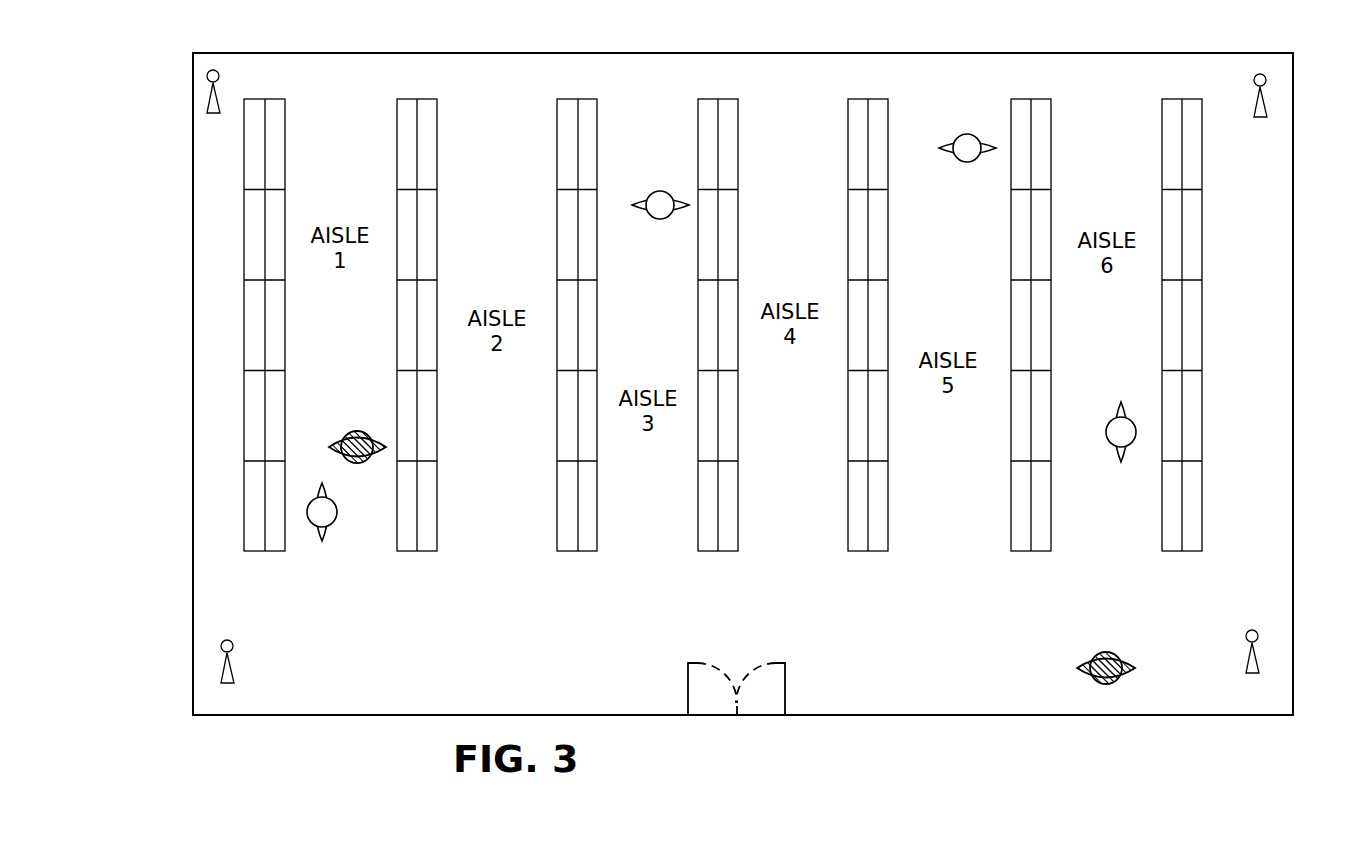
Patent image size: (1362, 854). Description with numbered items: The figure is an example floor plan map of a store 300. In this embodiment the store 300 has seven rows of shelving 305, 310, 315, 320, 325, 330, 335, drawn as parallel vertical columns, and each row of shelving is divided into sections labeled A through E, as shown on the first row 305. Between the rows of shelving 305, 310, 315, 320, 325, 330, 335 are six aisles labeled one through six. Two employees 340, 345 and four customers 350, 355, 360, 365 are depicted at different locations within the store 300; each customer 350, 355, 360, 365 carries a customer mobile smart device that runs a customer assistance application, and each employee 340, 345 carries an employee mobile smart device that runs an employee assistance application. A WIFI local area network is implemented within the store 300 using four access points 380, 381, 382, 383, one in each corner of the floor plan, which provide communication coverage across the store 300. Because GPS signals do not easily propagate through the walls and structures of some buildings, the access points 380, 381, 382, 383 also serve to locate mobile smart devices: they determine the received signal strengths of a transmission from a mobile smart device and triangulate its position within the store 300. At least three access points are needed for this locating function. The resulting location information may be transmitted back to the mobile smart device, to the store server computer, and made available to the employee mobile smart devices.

The store 300 is at (374, 53).
The row of shelving 305 is at (275, 99).
The row of shelving 310 is at (428, 99).
The row of shelving 315 is at (589, 99).
The row of shelving 320 is at (729, 99).
The row of shelving 325 is at (875, 99).
The row of shelving 330 is at (1017, 99).
The row of shelving 335 is at (1169, 99).
The employee 340 is at (365, 430).
The employee 345 is at (1100, 654).
The customer 350 is at (323, 541).
The customer 355 is at (662, 219).
The customer 360 is at (963, 162).
The customer 365 is at (1120, 460).
The access point 380 is at (210, 95).
The access point 381 is at (223, 667).
The access point 382 is at (1256, 655).
The access point 383 is at (1264, 99).